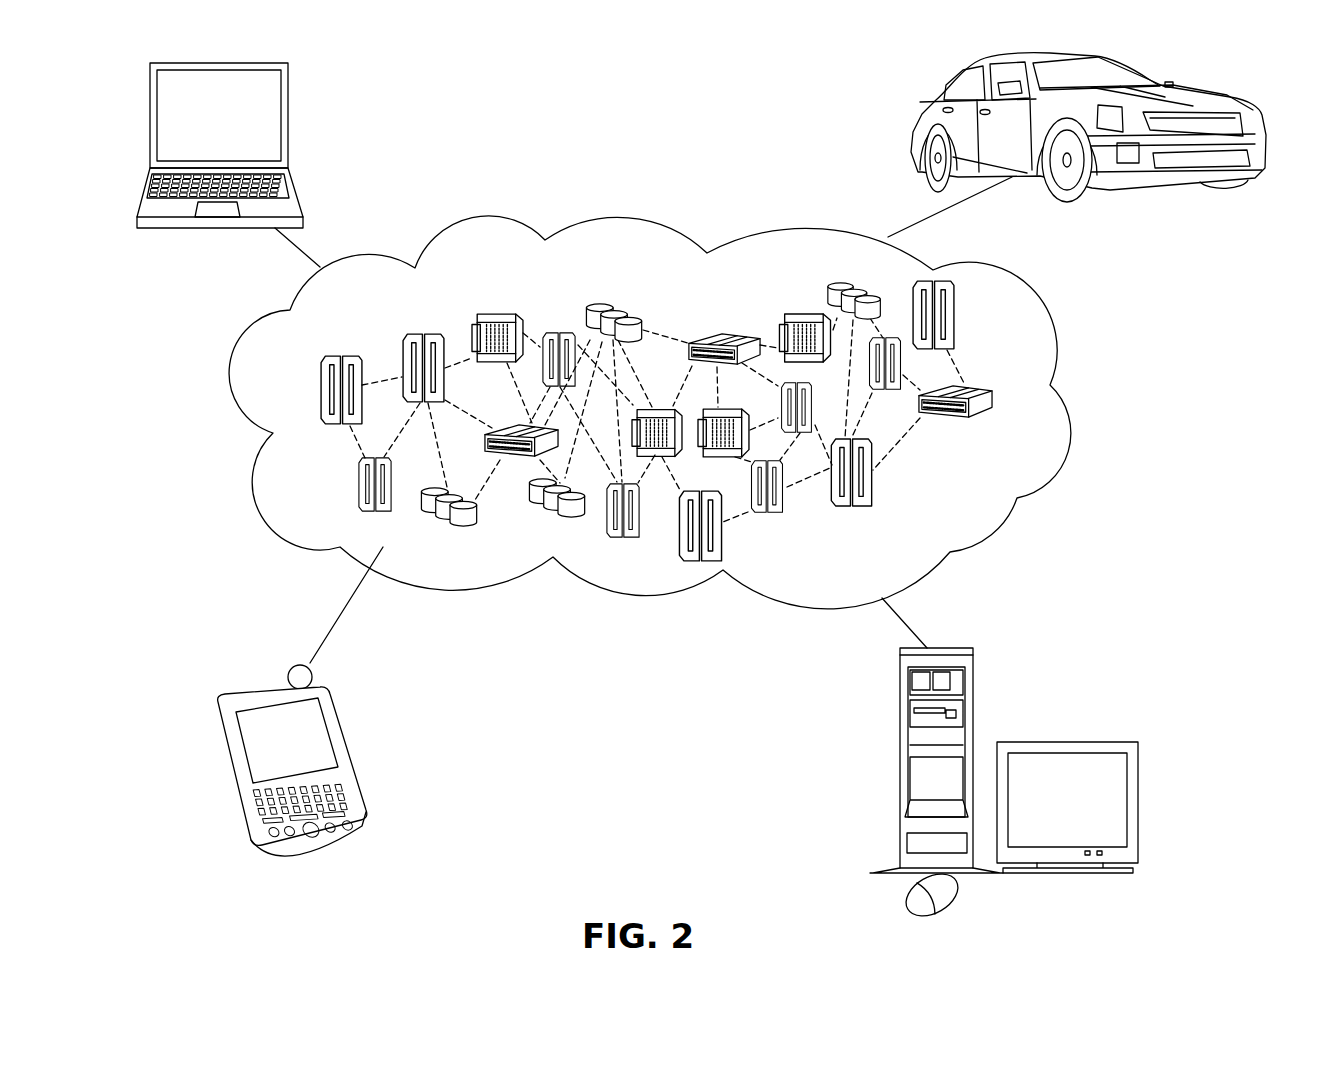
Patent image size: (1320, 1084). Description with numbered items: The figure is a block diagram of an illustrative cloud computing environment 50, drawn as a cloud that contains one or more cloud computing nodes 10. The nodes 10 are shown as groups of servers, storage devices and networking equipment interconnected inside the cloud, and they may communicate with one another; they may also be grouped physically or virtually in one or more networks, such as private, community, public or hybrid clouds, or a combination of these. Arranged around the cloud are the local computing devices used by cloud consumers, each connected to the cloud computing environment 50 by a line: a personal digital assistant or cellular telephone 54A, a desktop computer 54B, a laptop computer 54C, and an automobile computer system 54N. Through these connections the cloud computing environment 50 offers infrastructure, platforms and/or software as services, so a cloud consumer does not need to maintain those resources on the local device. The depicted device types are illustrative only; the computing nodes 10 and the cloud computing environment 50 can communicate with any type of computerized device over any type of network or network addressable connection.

The cloud computing node 10 is at (972, 500).
The cloud computing environment 50 is at (684, 412).
The personal digital assistant (PDA) or cellular telephone 54A is at (345, 722).
The desktop computer 54B is at (898, 708).
The laptop computer 54C is at (290, 100).
The automobile computer system 54N is at (912, 118).